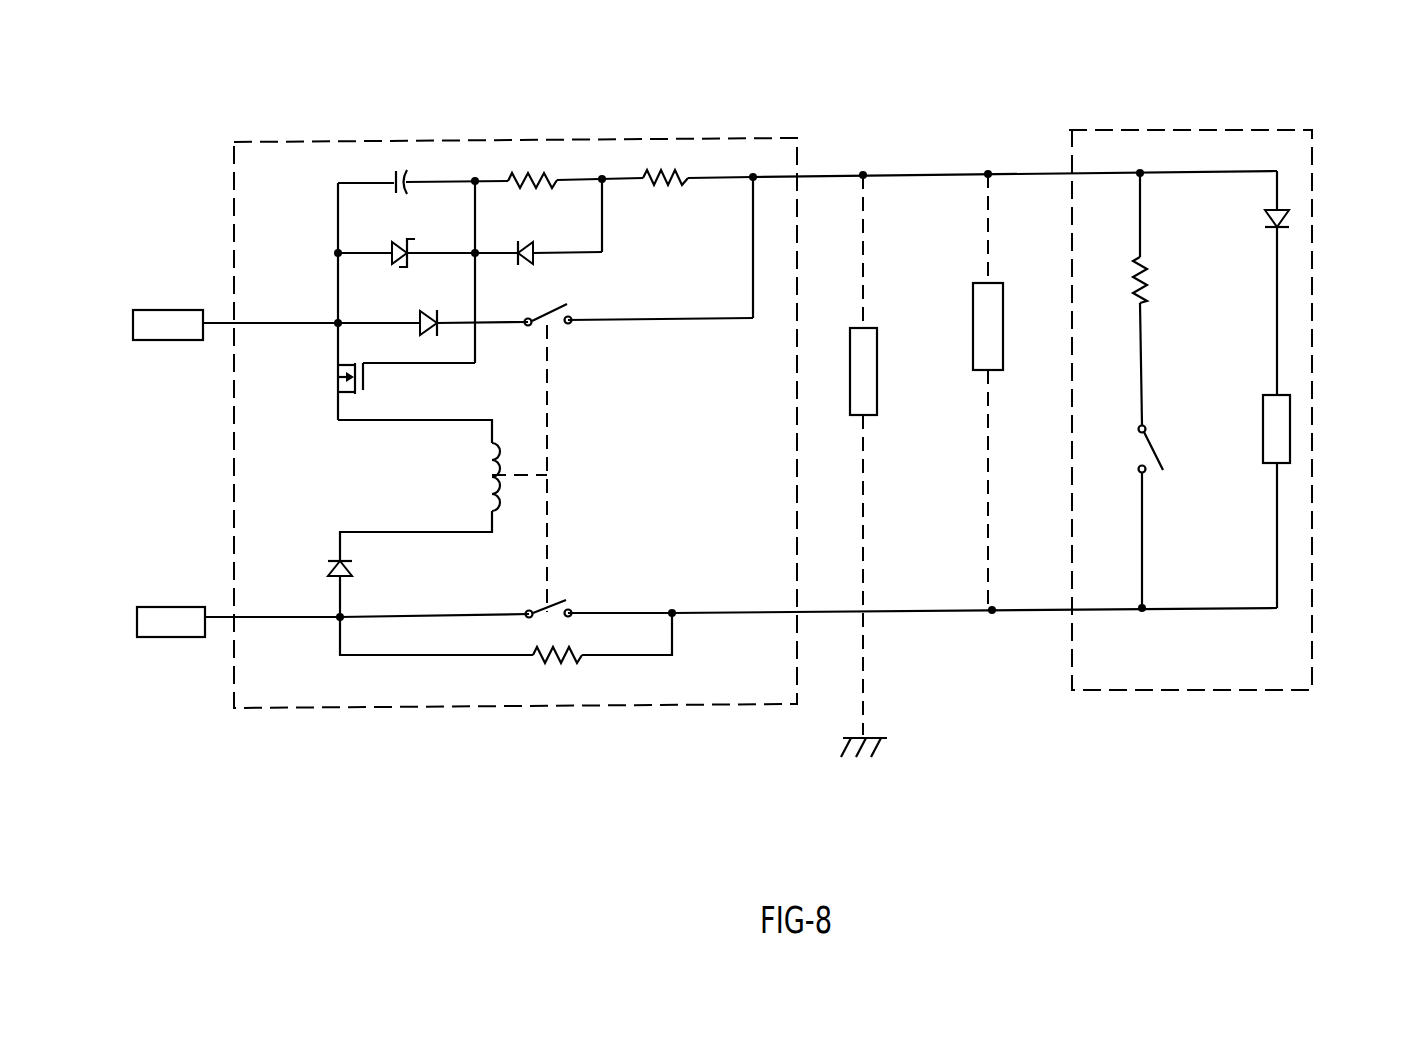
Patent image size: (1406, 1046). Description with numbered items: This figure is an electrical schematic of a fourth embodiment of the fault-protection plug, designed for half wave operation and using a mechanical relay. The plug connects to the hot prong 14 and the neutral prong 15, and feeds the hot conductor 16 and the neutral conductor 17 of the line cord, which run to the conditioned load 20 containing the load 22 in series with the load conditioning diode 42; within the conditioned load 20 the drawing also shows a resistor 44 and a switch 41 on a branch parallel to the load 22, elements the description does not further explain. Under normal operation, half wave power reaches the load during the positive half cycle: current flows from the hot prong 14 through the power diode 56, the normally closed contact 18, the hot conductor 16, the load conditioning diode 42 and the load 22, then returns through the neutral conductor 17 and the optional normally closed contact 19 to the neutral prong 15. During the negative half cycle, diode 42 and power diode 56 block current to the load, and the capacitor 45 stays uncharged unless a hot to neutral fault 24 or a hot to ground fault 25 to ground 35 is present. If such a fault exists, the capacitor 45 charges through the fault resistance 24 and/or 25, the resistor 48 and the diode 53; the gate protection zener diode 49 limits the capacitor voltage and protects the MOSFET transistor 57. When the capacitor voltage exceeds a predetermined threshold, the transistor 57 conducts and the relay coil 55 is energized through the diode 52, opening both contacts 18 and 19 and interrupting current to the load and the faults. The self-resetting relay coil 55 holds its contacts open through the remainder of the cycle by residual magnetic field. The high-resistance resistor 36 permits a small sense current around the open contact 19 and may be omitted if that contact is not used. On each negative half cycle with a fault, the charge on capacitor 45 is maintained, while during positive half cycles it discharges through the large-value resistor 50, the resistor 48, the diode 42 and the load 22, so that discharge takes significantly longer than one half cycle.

The hot prong 14 is at (170, 310).
The neutral prong 15 is at (173, 607).
The hot conductor 16 is at (923, 173).
The neutral conductor 17 is at (927, 610).
The normally closed contact 18 is at (543, 310).
The normally closed contact 19 is at (540, 605).
The conditioned load 20 is at (1102, 130).
The load 22 is at (1263, 410).
The hot to neutral fault 24 is at (588, 138).
The hot to ground fault 25 is at (877, 328).
The ground 35 is at (882, 735).
The resistor 36 is at (560, 655).
The load switch 41 is at (1152, 430).
The load conditioning diode 42 is at (1282, 210).
The load resistor 44 is at (1150, 275).
The capacitor 45 is at (393, 177).
The resistor 48 is at (670, 180).
The gate protection zener diode 49 is at (393, 247).
The resistor 50 is at (535, 185).
The diode 52 is at (330, 558).
The diode 53 is at (533, 255).
The relay coil 55 is at (488, 480).
The power diode 56 is at (423, 313).
The MOSFET transistor 57 is at (337, 372).